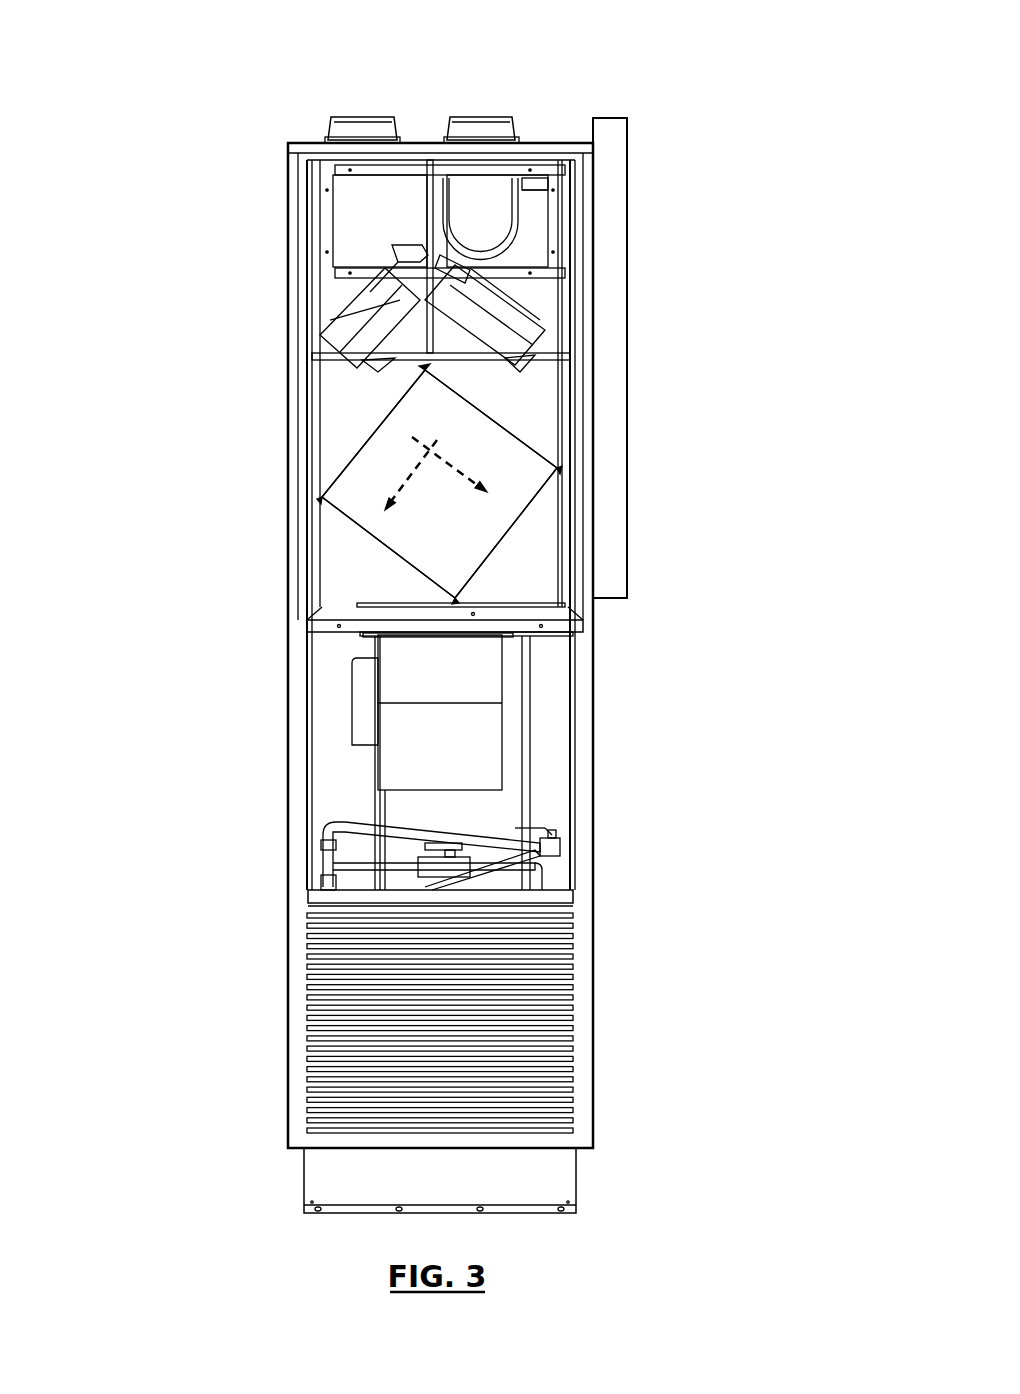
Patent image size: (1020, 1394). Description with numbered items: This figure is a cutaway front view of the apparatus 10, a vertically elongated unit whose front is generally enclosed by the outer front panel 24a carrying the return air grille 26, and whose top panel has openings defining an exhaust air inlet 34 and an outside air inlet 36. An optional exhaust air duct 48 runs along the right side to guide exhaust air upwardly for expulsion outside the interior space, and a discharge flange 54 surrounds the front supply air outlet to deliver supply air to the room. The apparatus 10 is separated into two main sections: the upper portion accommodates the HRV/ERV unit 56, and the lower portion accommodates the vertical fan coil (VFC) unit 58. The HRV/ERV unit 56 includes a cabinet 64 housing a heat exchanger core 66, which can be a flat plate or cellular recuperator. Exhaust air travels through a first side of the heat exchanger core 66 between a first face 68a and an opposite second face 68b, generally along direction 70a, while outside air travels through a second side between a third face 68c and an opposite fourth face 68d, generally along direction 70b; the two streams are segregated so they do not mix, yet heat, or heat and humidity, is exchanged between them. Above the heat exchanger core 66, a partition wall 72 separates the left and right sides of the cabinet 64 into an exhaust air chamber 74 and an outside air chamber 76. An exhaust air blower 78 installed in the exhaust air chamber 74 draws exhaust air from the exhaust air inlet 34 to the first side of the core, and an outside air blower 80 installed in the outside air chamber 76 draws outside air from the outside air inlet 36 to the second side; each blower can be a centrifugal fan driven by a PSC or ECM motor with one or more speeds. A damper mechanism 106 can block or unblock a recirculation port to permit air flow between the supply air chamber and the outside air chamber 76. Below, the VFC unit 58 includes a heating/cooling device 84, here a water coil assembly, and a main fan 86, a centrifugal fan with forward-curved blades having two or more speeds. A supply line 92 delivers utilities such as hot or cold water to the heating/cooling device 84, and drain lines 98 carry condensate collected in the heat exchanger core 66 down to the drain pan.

The apparatus 10 is at (161, 118).
The outer front panel 24a is at (582, 1093).
The return air grille 26 is at (537, 1047).
The exhaust air inlet 34 is at (360, 100).
The outside air inlet 36 is at (478, 100).
The exhaust air duct 48 is at (612, 364).
The discharge flange 54 is at (343, 194).
The HRV/ERV unit 56 is at (268, 143).
The vertical fan coil (VFC) unit 58 is at (268, 1147).
The cabinet 64 is at (567, 259).
The heat exchanger core 66 is at (433, 549).
The first face 68a is at (352, 438).
The second face 68b is at (521, 541).
The third face 68c is at (548, 441).
The fourth face 68d is at (372, 551).
The direction 70a is at (462, 466).
The direction 70b is at (455, 447).
The partition wall 72 is at (432, 208).
The exhaust air chamber 74 is at (348, 393).
The outside air chamber 76 is at (544, 390).
The exhaust air blower 78 is at (363, 302).
The outside air blower 80 is at (507, 312).
The heating/cooling device 84 is at (518, 897).
The main fan 86 is at (483, 737).
The supply line 92 is at (437, 833).
The drain lines 98 is at (377, 802).
The damper mechanism 106 is at (534, 214).